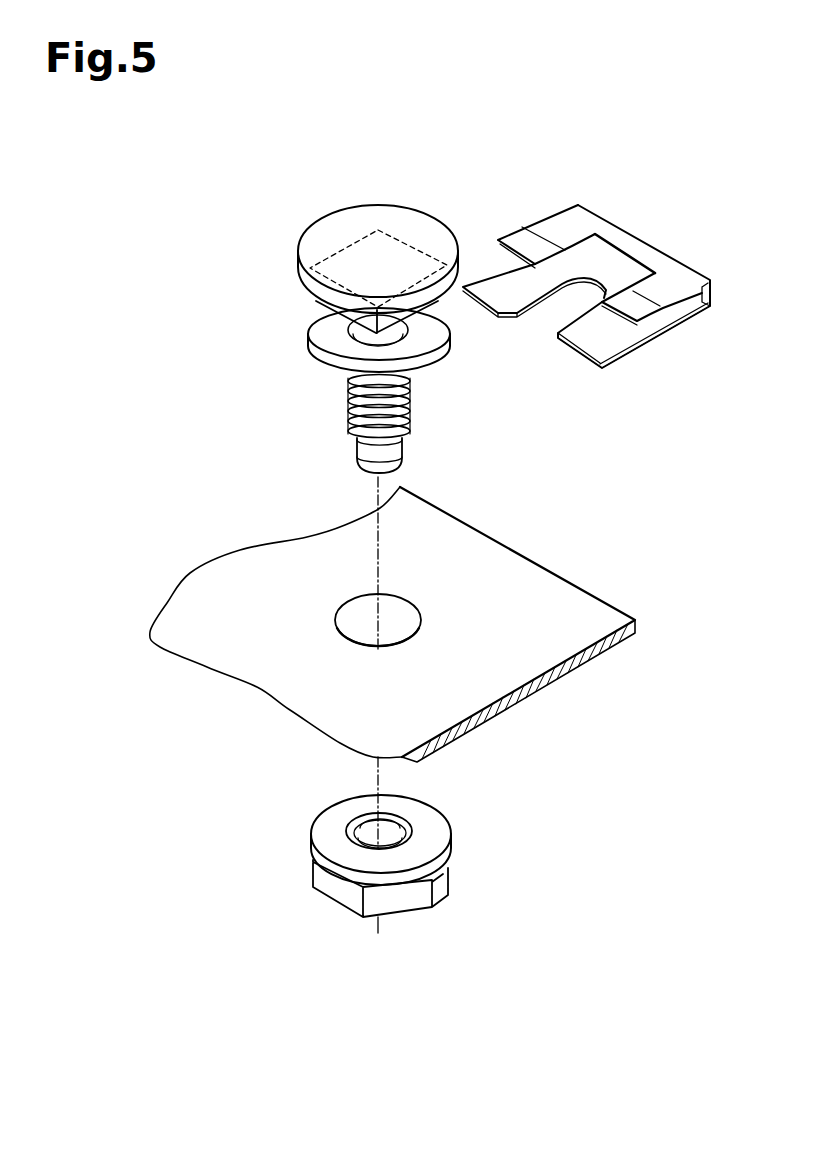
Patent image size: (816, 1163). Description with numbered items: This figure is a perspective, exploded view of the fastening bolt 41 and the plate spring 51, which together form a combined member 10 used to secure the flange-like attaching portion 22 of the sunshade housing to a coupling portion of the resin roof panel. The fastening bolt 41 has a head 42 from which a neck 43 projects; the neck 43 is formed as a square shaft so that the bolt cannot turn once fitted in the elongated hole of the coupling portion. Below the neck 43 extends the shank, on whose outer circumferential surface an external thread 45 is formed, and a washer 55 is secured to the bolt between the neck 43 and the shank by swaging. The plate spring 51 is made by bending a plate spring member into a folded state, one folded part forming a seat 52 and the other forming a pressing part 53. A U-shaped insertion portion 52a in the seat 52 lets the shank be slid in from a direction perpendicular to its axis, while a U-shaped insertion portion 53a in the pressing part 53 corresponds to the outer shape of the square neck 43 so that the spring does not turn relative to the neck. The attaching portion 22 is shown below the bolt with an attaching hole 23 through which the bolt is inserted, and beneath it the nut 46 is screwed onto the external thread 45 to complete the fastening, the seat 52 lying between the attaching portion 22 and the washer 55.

The combined member 10 is at (315, 220).
The fastening bolt 41 is at (295, 277).
The head 42 is at (410, 220).
The neck 43 is at (367, 323).
The external thread 45 is at (402, 405).
The washer 55 is at (428, 335).
The plate spring 51 is at (622, 223).
The seat 52 is at (625, 338).
The U-shaped insertion portion 52a is at (575, 325).
The pressing part 53 is at (660, 293).
The U-shaped insertion portion 53a is at (575, 263).
The attaching portion 22 is at (553, 600).
The attaching hole 23 is at (397, 607).
The nut 46 is at (437, 876).